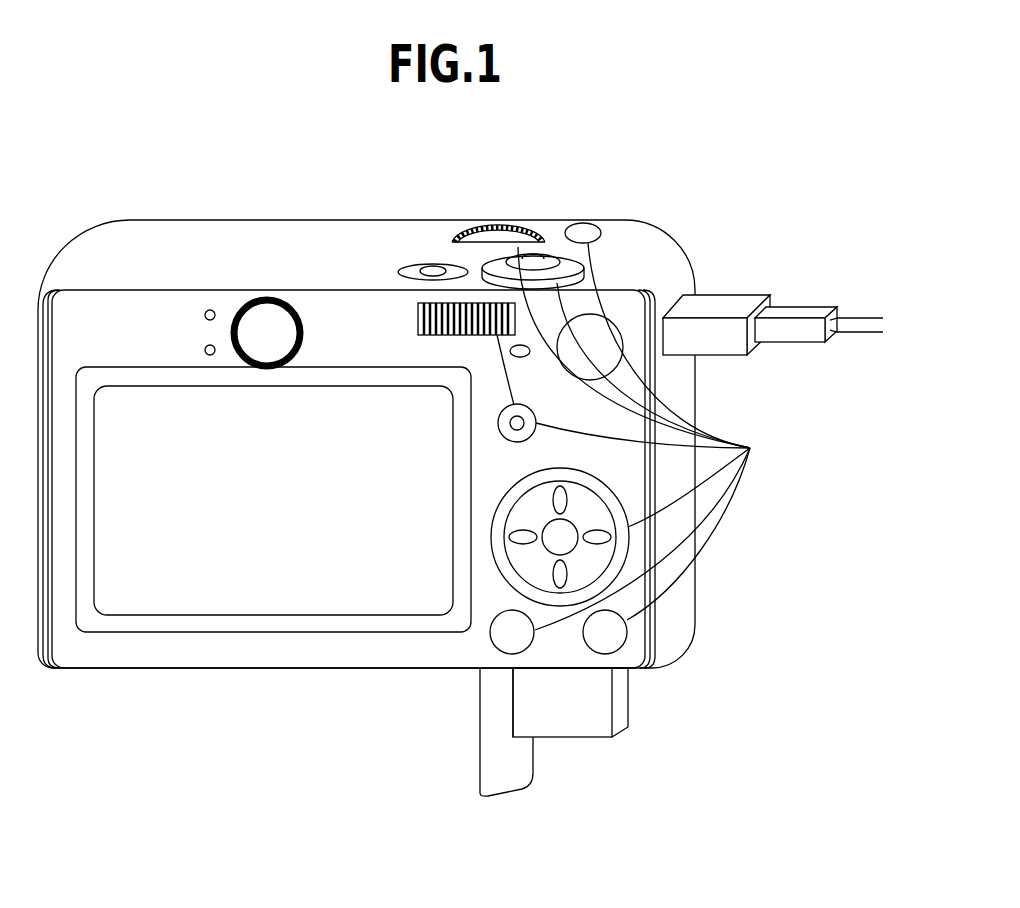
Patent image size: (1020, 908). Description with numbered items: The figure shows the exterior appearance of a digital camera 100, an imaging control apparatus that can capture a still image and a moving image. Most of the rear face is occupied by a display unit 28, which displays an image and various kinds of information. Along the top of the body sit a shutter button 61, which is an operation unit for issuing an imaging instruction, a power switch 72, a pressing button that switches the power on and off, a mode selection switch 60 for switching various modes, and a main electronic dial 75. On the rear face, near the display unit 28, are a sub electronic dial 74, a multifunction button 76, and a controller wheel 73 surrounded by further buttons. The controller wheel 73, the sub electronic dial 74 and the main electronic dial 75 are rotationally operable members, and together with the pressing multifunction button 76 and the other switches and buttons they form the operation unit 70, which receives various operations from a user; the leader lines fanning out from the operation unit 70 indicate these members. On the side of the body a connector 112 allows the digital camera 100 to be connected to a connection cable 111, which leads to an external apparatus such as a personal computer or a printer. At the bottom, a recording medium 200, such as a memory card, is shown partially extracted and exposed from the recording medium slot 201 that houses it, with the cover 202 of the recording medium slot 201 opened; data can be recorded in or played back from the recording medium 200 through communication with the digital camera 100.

The display unit 28 is at (176, 410).
The mode selection switch 60 is at (606, 316).
The shutter button 61 is at (555, 257).
The operation unit 70 is at (643, 436).
The power switch 72 is at (438, 266).
The controller wheel 73 is at (511, 481).
The sub electronic dial 74 is at (420, 322).
The main electronic dial 75 is at (458, 228).
The multifunction button 76 is at (583, 223).
The digital camera 100 is at (190, 696).
The connection cable 111 is at (802, 310).
The connector 112 is at (725, 302).
The recording medium 200 is at (594, 698).
The recording medium slot 201 is at (533, 672).
The cover 202 is at (533, 775).